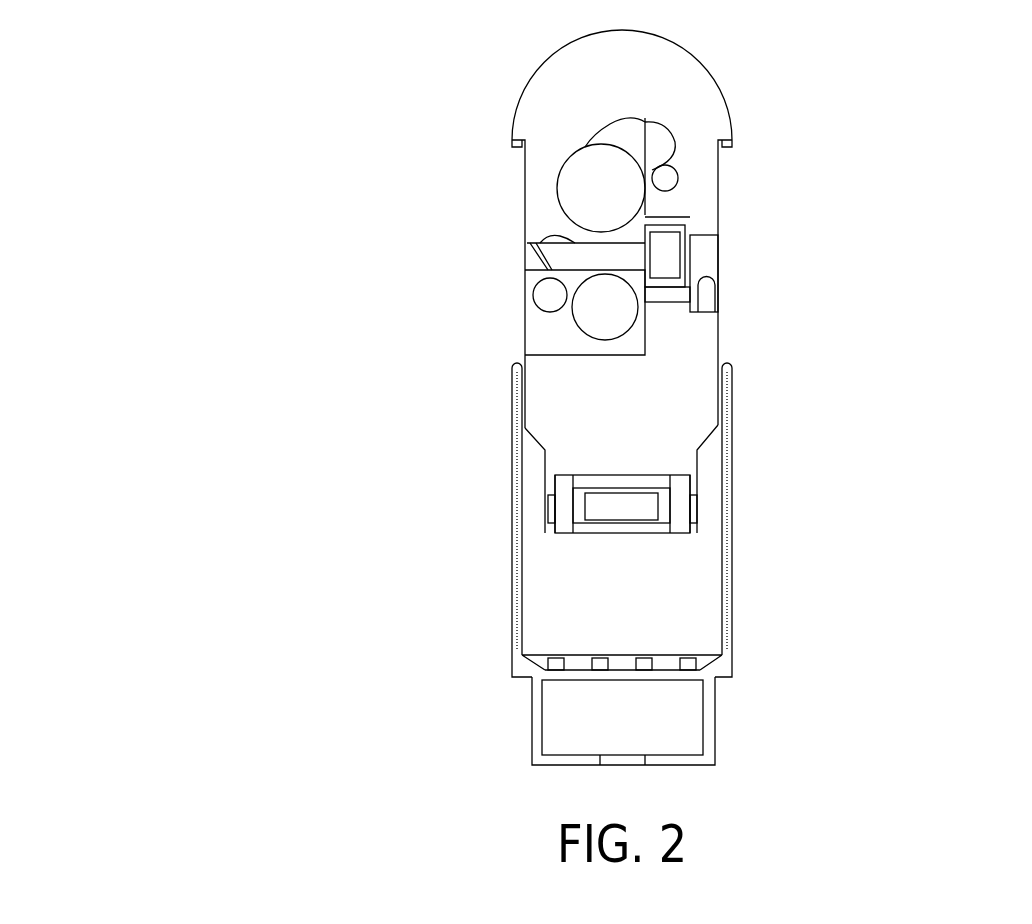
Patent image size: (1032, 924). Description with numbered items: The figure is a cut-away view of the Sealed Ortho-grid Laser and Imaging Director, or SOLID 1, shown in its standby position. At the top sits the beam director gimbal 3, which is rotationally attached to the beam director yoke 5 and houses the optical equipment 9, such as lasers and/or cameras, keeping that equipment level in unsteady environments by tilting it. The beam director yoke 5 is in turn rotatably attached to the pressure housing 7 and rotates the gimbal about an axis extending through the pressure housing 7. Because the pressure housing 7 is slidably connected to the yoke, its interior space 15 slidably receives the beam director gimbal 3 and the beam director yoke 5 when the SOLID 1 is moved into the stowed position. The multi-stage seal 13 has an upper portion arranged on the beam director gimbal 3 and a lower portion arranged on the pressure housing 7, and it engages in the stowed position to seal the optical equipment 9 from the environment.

The Sealed Ortho-grid Laser and Imaging Director (SOLID) 1 is at (226, 250).
The beam director gimbal 3 is at (728, 105).
The beam director yoke 5 is at (715, 345).
The pressure housing 7 is at (735, 545).
The optical equipment 9 is at (633, 210).
The multi-stage seal 13 is at (512, 141).
The interior space 15 is at (675, 713).